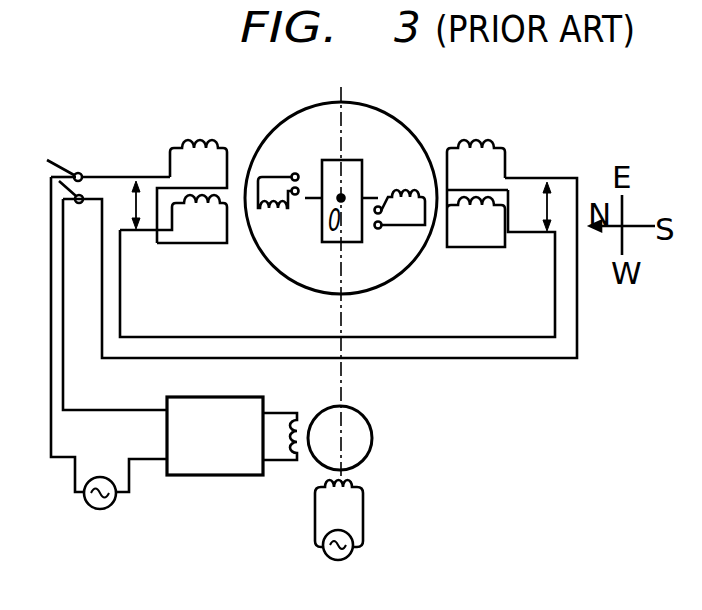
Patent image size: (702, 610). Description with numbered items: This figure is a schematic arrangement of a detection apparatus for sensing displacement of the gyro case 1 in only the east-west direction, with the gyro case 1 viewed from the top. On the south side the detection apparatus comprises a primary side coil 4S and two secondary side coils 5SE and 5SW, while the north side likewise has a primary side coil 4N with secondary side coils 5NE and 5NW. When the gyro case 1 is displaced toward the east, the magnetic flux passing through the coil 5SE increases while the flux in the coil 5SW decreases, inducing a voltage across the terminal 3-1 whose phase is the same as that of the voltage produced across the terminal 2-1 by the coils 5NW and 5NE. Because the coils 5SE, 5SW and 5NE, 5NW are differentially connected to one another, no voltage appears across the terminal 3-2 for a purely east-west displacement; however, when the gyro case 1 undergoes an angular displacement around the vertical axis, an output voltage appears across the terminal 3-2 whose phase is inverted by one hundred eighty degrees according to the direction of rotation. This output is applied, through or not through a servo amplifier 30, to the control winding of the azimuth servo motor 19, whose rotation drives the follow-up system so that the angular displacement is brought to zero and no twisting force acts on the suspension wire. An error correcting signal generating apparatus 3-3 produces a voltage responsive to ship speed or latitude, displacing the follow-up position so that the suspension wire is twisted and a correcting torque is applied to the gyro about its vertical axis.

The gyro case 1 is at (391, 114).
The terminal 2-1 is at (135, 194).
The terminal 3-1 is at (547, 205).
The terminal 3-2 is at (51, 162).
The error correcting signal generating apparatus 3-3 is at (104, 476).
The primary side coil 4N is at (252, 192).
The primary side coil 4S is at (392, 197).
The secondary side coil 5NE is at (191, 145).
The secondary side coil 5NW is at (197, 245).
The secondary side coil 5SE is at (476, 149).
The secondary side coil 5SW is at (487, 248).
The azimuth servo motor 19 is at (371, 434).
The servo amplifier 30 is at (222, 477).